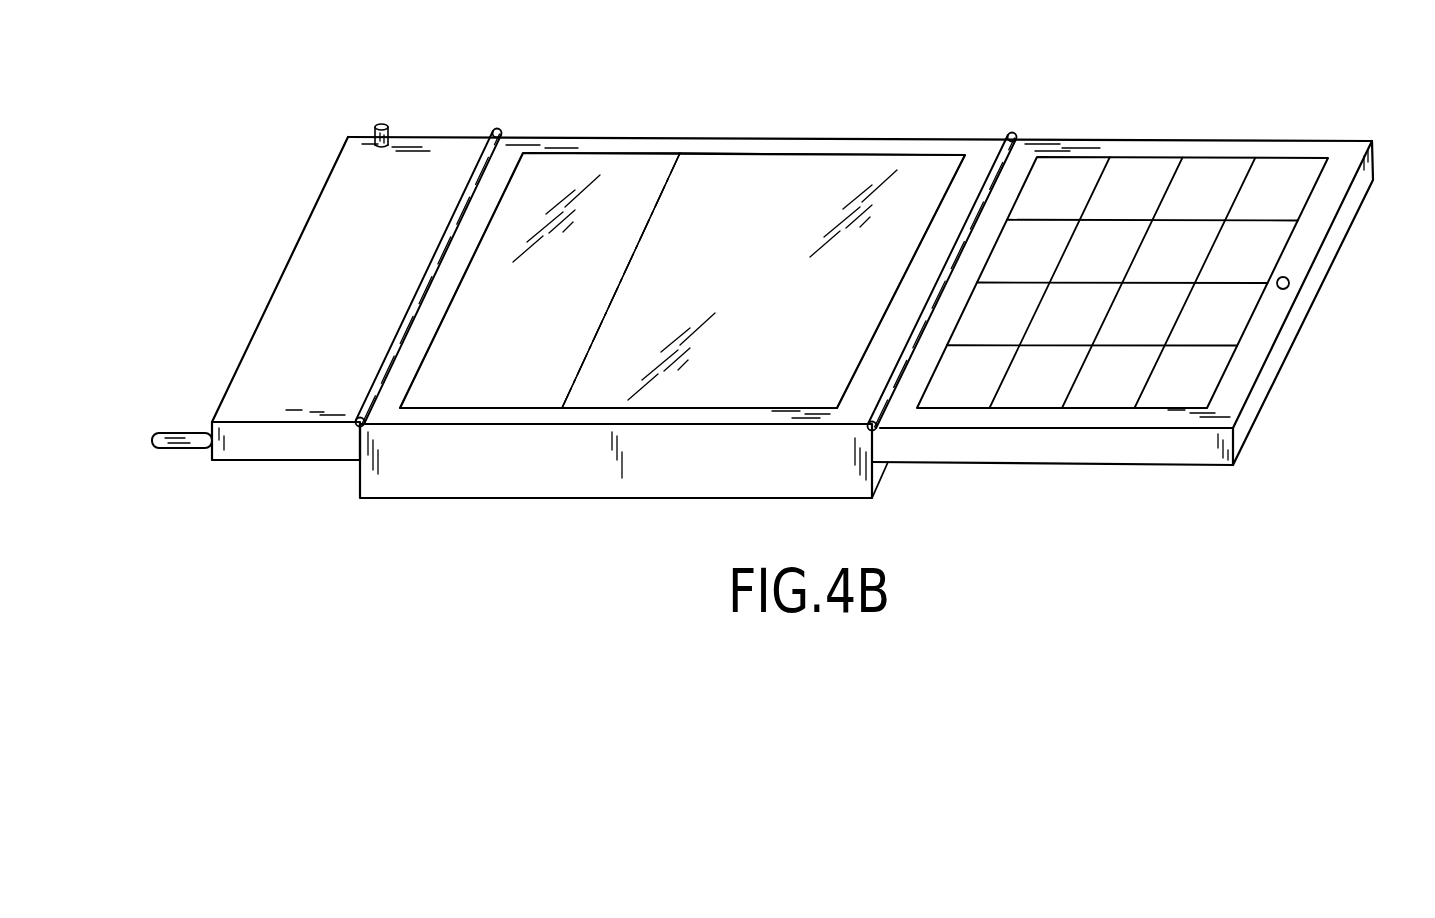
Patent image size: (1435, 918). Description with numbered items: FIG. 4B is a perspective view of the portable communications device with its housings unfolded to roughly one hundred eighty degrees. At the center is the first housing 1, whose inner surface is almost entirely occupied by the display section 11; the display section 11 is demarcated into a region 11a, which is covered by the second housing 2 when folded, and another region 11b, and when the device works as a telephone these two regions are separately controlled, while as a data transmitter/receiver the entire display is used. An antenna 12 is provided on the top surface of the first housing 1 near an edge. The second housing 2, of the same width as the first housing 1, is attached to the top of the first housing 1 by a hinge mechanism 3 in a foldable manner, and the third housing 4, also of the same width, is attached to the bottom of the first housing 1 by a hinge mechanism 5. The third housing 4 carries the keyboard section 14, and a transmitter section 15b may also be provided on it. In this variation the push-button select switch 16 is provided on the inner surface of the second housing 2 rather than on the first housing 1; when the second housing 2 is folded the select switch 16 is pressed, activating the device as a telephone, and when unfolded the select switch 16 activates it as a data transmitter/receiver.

The first housing 1 is at (557, 476).
The second housing 2 is at (310, 452).
The hinge mechanism 3 is at (495, 128).
The third housing 4 is at (1130, 455).
The hinge mechanism 5 is at (1015, 134).
The display section 11 is at (917, 80).
The region 11a is at (633, 163).
The region 11b is at (817, 173).
The antenna 12 is at (180, 430).
The keyboard section 14 is at (1150, 168).
The transmitter section 15b is at (1289, 281).
The push-button select switch 16 is at (375, 124).